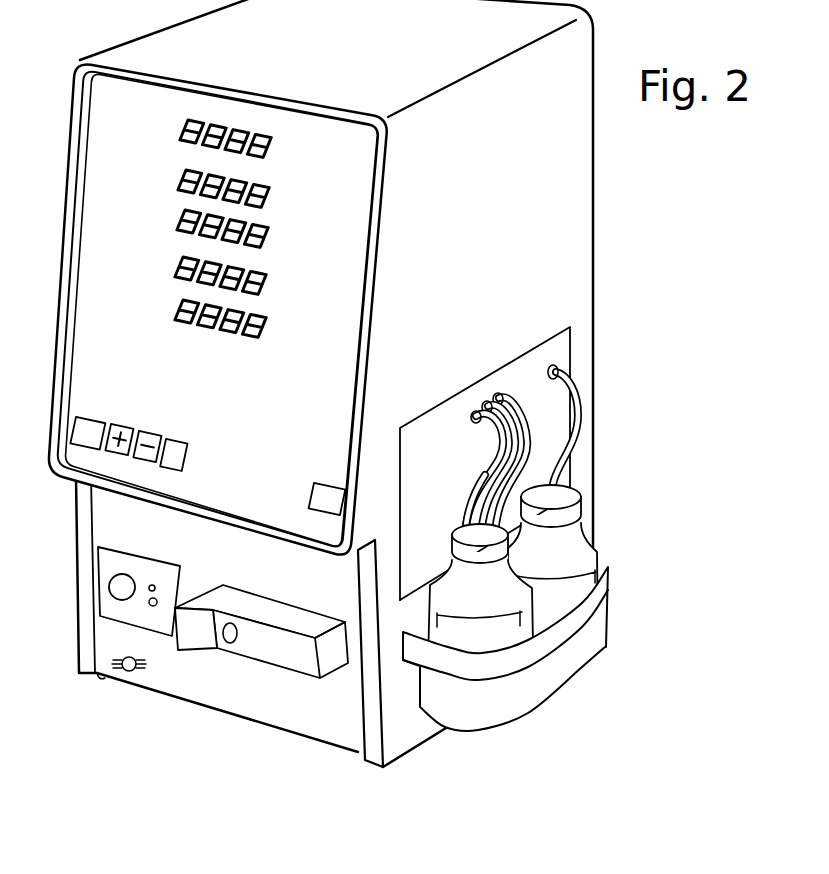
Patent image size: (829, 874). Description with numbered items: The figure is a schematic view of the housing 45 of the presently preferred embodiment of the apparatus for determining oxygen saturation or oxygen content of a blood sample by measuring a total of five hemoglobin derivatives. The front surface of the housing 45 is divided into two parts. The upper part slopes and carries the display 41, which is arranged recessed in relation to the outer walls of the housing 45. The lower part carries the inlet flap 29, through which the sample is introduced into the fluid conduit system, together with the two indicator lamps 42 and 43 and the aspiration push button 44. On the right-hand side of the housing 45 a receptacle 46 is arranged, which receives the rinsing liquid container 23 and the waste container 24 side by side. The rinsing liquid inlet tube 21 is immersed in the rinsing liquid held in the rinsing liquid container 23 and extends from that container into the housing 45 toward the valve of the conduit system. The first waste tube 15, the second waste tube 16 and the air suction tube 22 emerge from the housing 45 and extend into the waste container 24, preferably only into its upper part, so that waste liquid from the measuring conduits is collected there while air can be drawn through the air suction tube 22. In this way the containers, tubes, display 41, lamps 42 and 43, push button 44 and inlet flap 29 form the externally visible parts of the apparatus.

The display 41 is at (92, 168).
The housing 45 is at (582, 168).
The aspiration push button 44 is at (107, 586).
The indicator lamp 43 is at (152, 583).
The indicator lamp 42 is at (158, 600).
The inlet flap 29 is at (278, 610).
The first waste tube 15 is at (500, 438).
The second waste tube 16 is at (465, 490).
The air suction tube 22 is at (508, 436).
The rinsing liquid inlet tube 21 is at (588, 418).
The rinsing liquid container 23 is at (588, 548).
The waste container 24 is at (452, 578).
The receptacle 46 is at (528, 700).